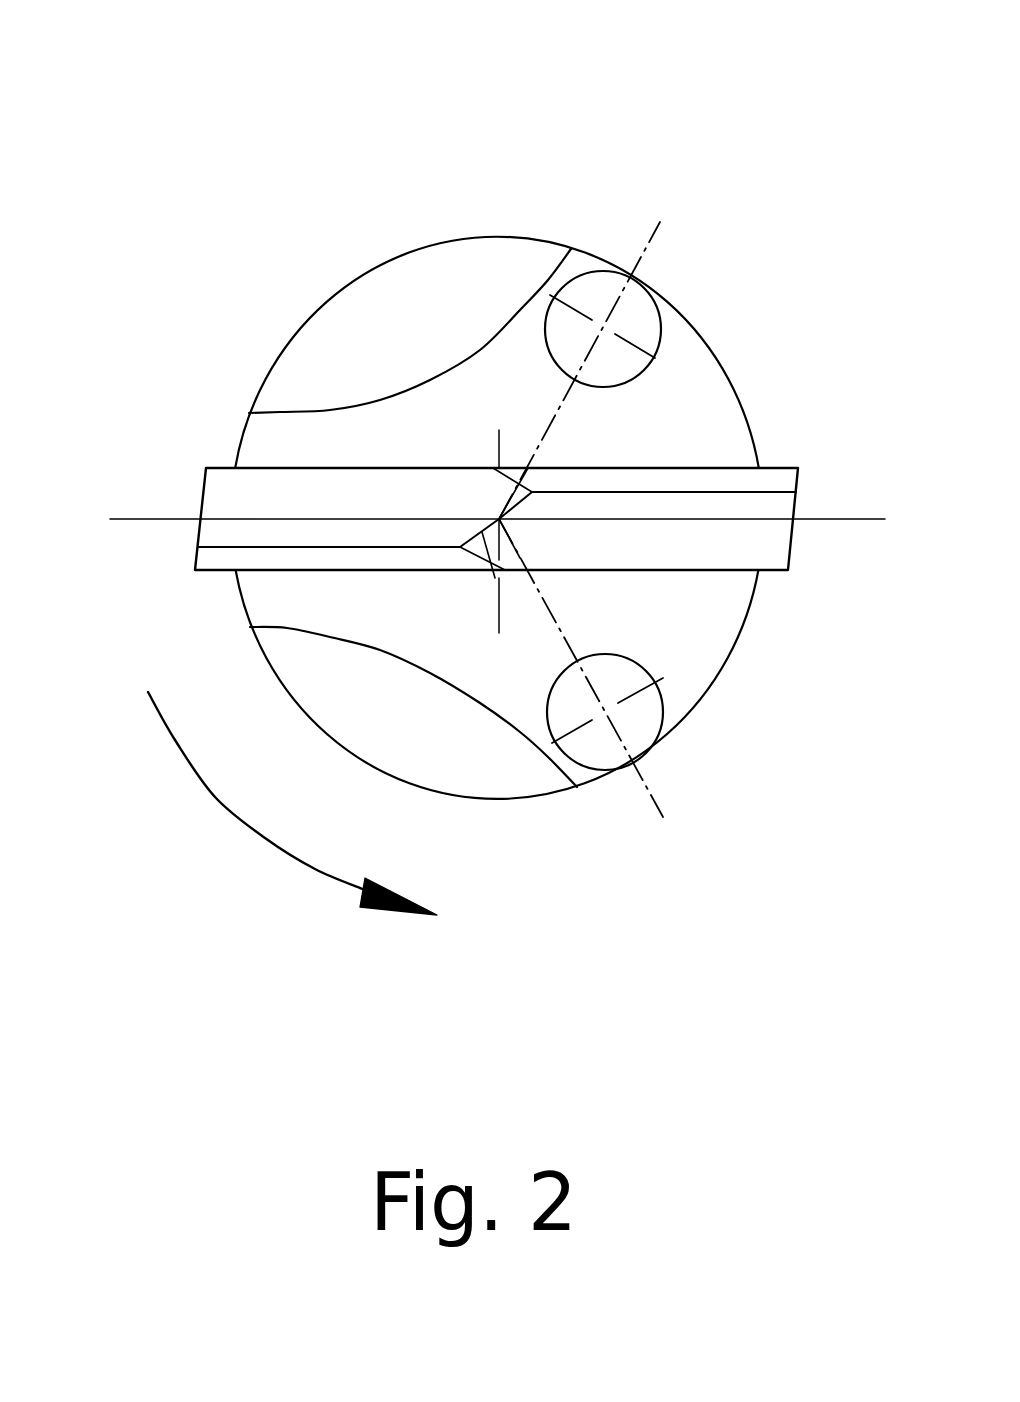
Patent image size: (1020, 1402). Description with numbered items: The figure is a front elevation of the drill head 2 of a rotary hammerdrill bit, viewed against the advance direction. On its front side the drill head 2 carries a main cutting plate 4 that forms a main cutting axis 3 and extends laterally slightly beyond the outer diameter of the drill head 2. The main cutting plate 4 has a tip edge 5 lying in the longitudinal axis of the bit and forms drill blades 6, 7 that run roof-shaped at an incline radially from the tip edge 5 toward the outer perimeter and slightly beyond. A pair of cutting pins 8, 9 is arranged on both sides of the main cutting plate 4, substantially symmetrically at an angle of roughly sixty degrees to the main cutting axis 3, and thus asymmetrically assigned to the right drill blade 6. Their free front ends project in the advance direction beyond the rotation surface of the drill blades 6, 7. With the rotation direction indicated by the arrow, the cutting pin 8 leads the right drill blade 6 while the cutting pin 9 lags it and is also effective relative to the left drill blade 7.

The drill head 2 is at (420, 305).
The main cutting axis 3 is at (860, 520).
The main cutting plate 4 is at (303, 487).
The tip edge 5 is at (497, 578).
The drill blade 6 is at (708, 491).
The drill blade 7 is at (273, 547).
The cutting pin 8 is at (638, 318).
The cutting pin 9 is at (650, 740).